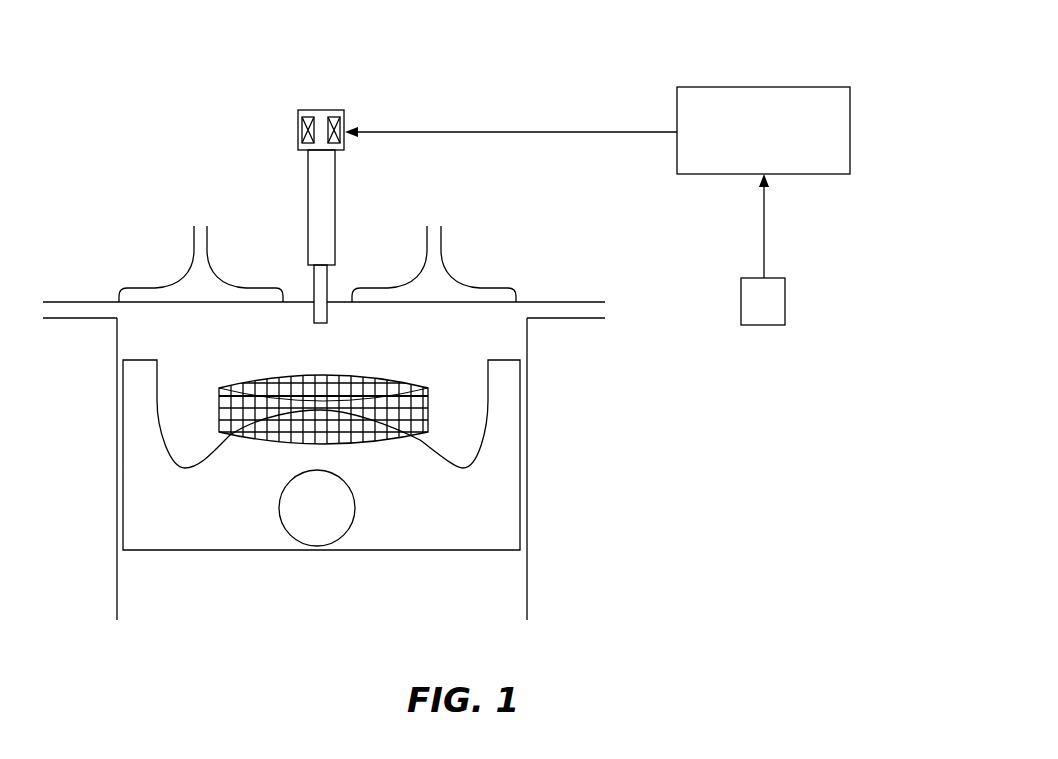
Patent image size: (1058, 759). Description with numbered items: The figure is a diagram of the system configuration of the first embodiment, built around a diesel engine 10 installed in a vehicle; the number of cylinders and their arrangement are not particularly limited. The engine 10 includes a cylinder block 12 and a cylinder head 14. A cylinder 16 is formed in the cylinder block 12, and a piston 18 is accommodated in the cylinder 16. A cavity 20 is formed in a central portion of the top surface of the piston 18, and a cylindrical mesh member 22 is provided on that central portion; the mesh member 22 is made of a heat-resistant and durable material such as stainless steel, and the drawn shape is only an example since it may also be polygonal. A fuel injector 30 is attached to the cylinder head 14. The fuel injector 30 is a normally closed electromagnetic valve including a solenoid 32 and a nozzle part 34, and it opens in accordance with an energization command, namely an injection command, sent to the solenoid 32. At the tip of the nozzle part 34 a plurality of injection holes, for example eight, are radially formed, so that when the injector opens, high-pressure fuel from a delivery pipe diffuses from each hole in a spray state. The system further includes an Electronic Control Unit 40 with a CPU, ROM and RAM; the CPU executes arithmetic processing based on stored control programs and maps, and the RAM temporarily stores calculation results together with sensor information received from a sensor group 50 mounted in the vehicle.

The diesel engine 10 is at (591, 268).
The cylinder block 12 is at (83, 372).
The cylinder head 14 is at (83, 278).
The cylinder 16 is at (527, 607).
The piston 18 is at (520, 455).
The cavity 20 is at (485, 380).
The mesh member 22 is at (430, 405).
The fuel injector 30 is at (358, 101).
The solenoid 32 is at (300, 133).
The nozzle part 34 is at (312, 313).
The Electronic Control Unit 40 is at (817, 87).
The sensor group 50 is at (785, 305).